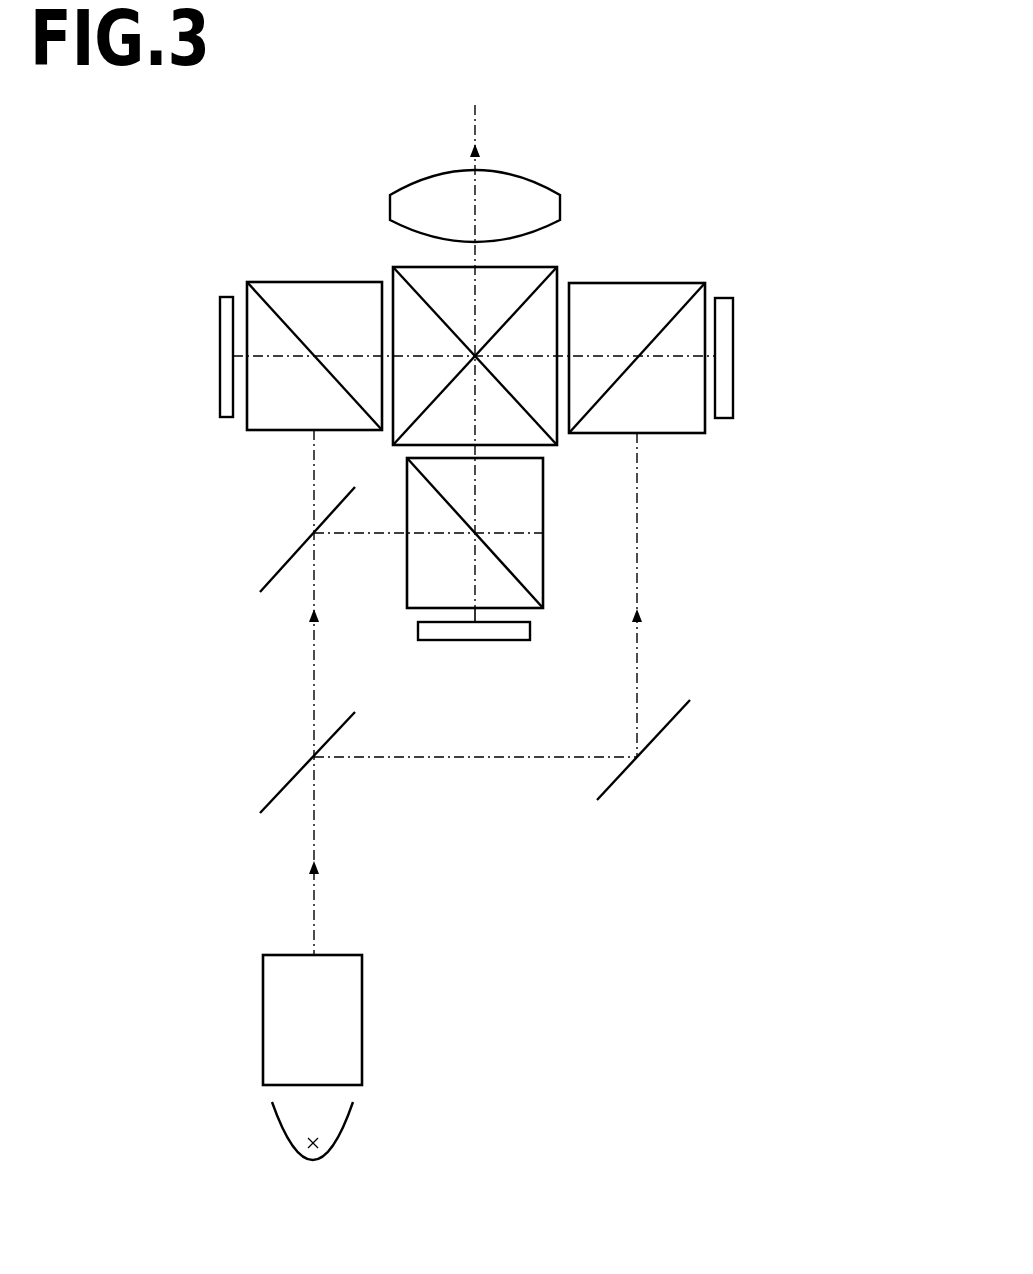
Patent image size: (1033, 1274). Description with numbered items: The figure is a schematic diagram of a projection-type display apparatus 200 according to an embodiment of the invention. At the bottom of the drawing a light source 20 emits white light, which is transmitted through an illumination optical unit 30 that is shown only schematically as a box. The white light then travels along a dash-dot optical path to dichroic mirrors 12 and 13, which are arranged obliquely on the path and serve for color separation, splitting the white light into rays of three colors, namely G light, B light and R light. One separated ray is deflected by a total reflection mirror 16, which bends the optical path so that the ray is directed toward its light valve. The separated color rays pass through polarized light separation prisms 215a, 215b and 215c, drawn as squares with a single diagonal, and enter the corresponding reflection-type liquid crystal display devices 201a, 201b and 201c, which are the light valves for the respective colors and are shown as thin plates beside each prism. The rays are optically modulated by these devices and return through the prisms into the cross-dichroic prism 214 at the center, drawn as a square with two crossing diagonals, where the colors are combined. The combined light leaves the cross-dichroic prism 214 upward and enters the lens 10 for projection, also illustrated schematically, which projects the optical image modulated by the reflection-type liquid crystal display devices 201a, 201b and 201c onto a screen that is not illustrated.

The projection-type display apparatus 200 is at (543, 116).
The lens for projection 10 is at (390, 196).
The cross-dichroic prism 214 is at (440, 272).
The polarized light separation prism 215a is at (312, 283).
The polarized light separation prism 215b is at (535, 537).
The polarized light separation prism 215c is at (670, 285).
The reflection-type liquid crystal display device 201a is at (219, 326).
The reflection-type liquid crystal display device 201b is at (480, 641).
The reflection-type liquid crystal display device 201c is at (733, 322).
The dichroic mirror 13 is at (283, 566).
The dichroic mirror 12 is at (300, 767).
The total reflection mirror 16 is at (618, 773).
The illumination optical unit 30 is at (263, 998).
The light source 20 is at (277, 1120).